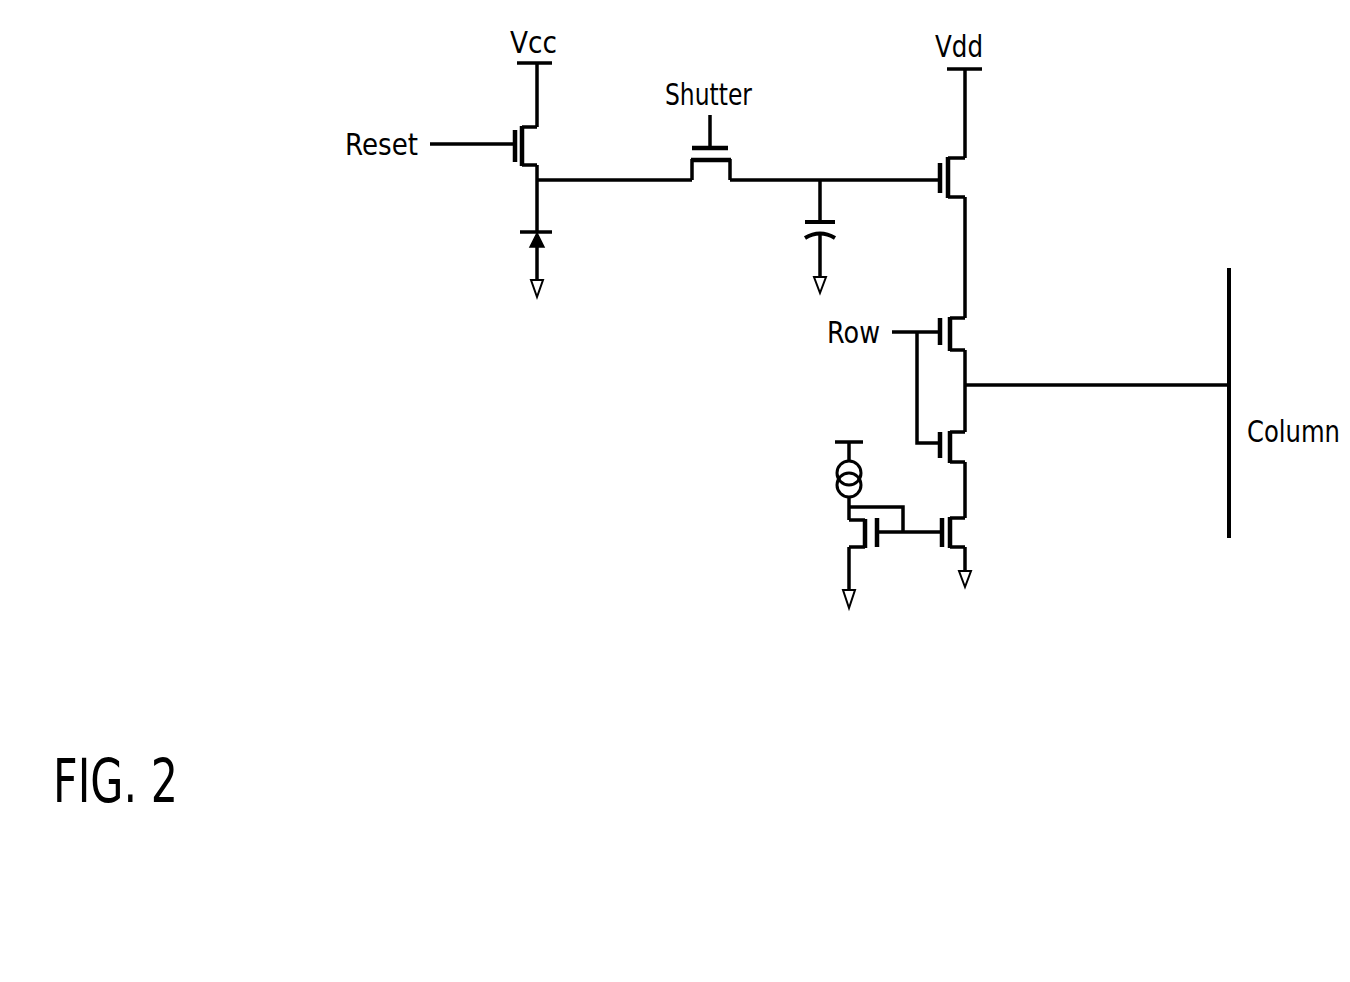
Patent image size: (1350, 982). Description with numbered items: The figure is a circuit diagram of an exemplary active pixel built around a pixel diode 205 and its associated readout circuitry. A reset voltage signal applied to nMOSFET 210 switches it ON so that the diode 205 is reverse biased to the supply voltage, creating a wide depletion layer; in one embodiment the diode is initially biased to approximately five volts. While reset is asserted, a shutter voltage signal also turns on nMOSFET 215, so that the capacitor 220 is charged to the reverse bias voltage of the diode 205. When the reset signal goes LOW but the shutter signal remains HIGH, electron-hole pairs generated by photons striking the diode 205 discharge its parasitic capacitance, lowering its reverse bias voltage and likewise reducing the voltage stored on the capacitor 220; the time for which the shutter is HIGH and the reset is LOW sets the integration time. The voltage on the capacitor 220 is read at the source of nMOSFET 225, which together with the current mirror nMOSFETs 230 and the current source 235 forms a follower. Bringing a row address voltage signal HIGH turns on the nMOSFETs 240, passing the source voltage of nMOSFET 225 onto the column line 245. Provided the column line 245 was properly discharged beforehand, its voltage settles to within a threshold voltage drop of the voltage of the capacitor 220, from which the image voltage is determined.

The pixel diode 205 is at (528, 234).
The nMOSFET 210 is at (512, 152).
The nMOSFET 215 is at (710, 167).
The capacitor 220 is at (817, 245).
The nMOSFET 225 is at (958, 181).
The current mirror nMOSFETs 230 is at (873, 555).
The current source 235 is at (837, 473).
The nMOSFETs 240 is at (960, 334).
The column line 245 is at (917, 377).